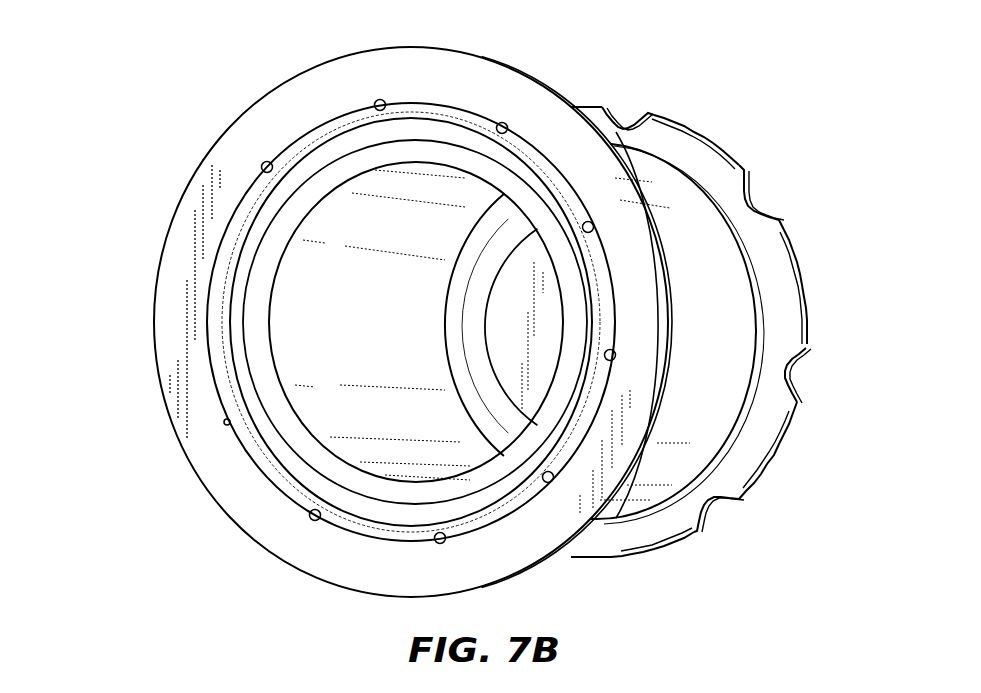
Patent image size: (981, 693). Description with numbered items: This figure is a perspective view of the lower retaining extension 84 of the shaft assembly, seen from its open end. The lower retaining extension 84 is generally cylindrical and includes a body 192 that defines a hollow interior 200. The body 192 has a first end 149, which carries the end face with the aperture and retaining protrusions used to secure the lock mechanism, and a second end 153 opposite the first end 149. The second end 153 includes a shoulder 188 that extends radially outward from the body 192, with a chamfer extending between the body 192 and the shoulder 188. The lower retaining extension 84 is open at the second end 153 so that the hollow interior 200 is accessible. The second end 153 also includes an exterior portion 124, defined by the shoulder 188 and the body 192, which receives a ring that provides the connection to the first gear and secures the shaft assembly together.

The lower retaining extension 84 is at (722, 89).
The second end 153 is at (150, 237).
The first end 149 is at (811, 256).
The body 192 is at (711, 317).
The shoulder 188 is at (218, 455).
The hollow interior 200 is at (329, 315).
The exterior portion 124 is at (308, 519).